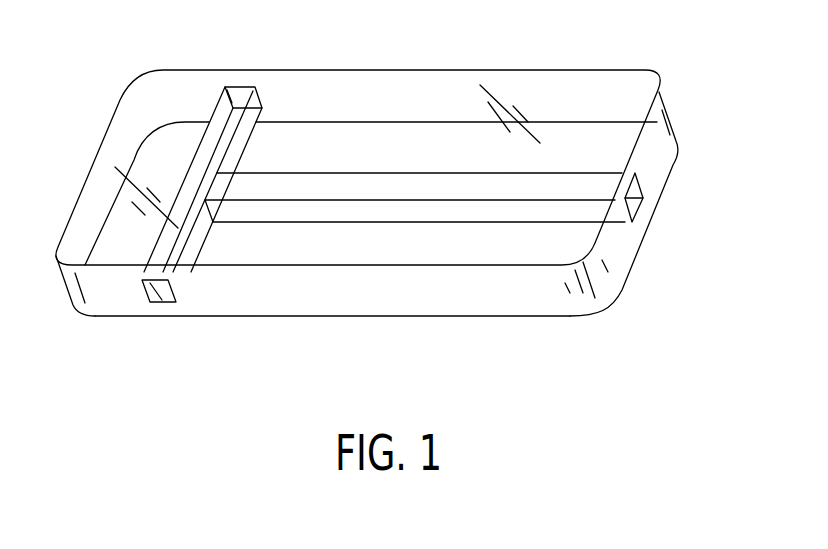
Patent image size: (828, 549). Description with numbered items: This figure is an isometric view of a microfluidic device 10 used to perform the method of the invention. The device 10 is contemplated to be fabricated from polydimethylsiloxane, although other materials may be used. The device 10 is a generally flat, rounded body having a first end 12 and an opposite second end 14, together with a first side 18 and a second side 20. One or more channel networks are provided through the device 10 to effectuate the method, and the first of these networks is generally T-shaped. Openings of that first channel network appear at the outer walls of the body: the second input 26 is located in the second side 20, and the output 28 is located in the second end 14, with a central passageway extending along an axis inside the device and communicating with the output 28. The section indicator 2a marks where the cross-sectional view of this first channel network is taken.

The microfluidic device 10 is at (616, 318).
The first end 12 is at (106, 134).
The second end 14 is at (657, 162).
The first side 18 is at (445, 70).
The second side 20 is at (372, 307).
The second input 26 is at (168, 292).
The output 28 is at (632, 205).
The section line 2a is at (263, 55).